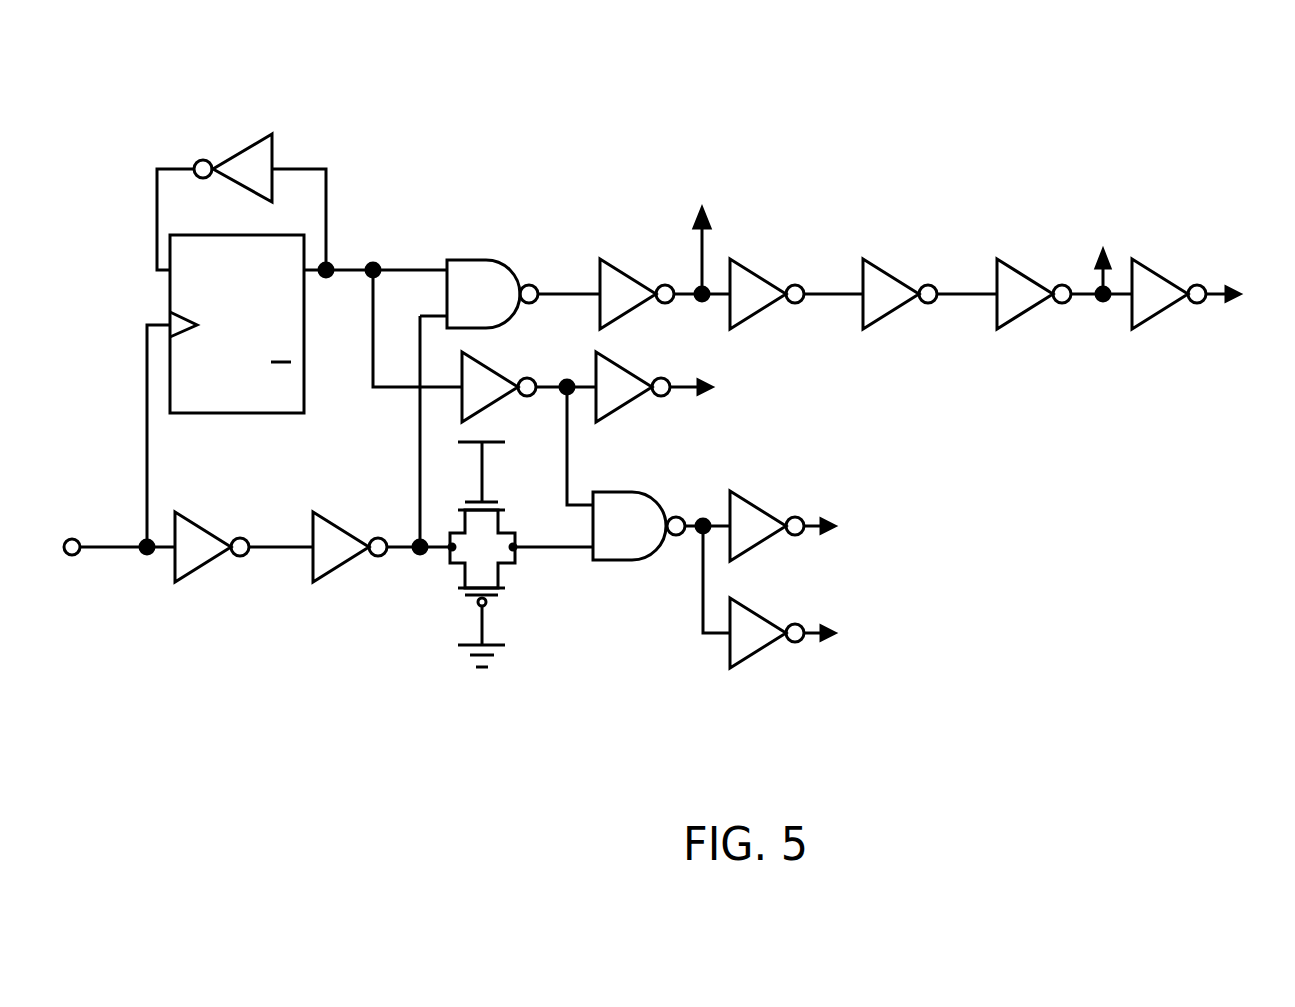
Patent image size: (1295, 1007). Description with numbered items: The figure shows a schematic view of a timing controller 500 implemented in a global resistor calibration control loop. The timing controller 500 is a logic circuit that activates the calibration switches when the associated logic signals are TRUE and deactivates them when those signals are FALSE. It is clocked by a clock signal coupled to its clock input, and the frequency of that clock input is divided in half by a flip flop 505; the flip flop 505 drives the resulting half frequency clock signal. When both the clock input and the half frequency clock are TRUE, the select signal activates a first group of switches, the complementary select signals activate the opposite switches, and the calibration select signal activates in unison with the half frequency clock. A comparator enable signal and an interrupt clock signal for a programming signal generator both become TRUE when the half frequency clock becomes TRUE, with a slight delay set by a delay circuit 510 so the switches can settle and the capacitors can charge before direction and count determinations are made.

The timing controller 500 is at (1130, 76).
The flip flop 505 is at (250, 413).
The delay circuit 510 is at (536, 593).